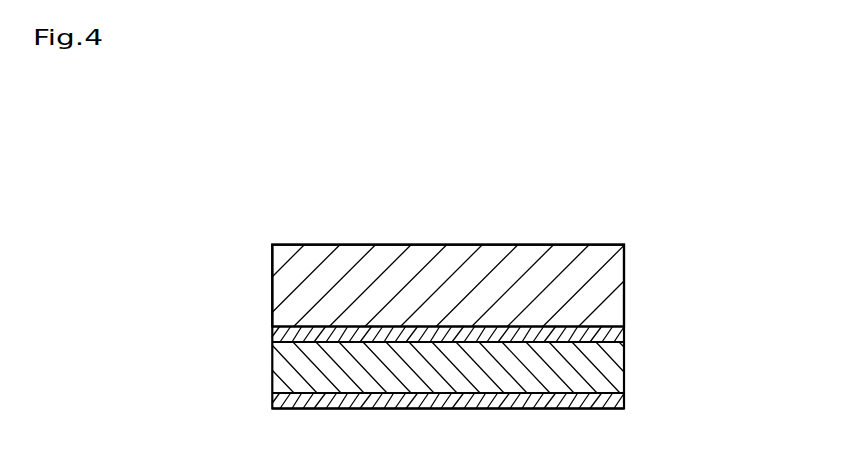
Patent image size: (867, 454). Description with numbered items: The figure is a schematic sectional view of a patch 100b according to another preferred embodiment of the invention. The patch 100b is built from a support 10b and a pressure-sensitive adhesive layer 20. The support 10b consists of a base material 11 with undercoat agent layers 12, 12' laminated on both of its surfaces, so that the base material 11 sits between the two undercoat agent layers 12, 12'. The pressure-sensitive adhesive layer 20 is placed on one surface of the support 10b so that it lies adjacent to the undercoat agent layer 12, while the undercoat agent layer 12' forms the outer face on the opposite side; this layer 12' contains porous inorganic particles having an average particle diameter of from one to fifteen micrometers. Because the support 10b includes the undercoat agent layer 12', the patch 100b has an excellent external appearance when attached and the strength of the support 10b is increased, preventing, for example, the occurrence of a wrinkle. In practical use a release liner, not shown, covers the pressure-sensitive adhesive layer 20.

The patch 100b is at (728, 146).
The pressure-sensitive adhesive layer 20 is at (612, 286).
The support 10b is at (720, 322).
The undercoat agent layer 12 is at (487, 337).
The base material 11 is at (612, 364).
The undercoat agent layer 12' is at (491, 404).